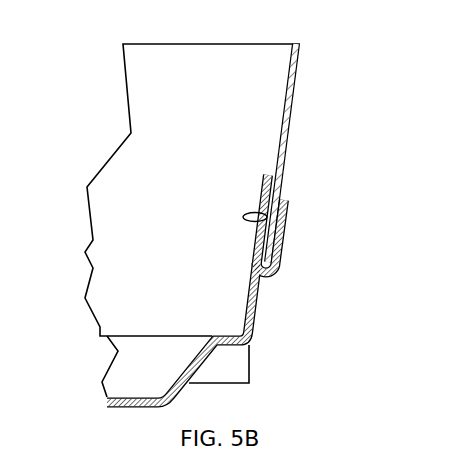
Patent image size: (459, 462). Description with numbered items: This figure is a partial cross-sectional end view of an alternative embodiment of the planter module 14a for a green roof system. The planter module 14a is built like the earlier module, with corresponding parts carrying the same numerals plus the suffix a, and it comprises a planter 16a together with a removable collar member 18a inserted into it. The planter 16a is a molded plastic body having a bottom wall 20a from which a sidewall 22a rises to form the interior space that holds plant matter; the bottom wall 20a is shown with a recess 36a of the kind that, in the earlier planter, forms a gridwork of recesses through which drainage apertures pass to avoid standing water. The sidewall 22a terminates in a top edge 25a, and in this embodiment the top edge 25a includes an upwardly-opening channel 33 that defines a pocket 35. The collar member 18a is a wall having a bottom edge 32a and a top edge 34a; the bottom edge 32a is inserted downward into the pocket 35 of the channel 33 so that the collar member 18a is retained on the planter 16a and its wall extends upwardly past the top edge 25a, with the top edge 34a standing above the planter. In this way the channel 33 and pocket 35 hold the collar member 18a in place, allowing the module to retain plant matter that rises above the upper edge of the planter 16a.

The planter module 14a is at (86, 64).
The planter 16a is at (268, 310).
The collar member 18a is at (308, 108).
The bottom wall 20a is at (216, 336).
The sidewall 22a is at (286, 209).
The top edge 25a is at (270, 174).
The bottom edge 32a is at (258, 233).
The upwardly-opening channel 33 is at (283, 243).
The top edge 34a is at (300, 52).
The pocket 35 is at (258, 214).
The recess 36a is at (130, 397).